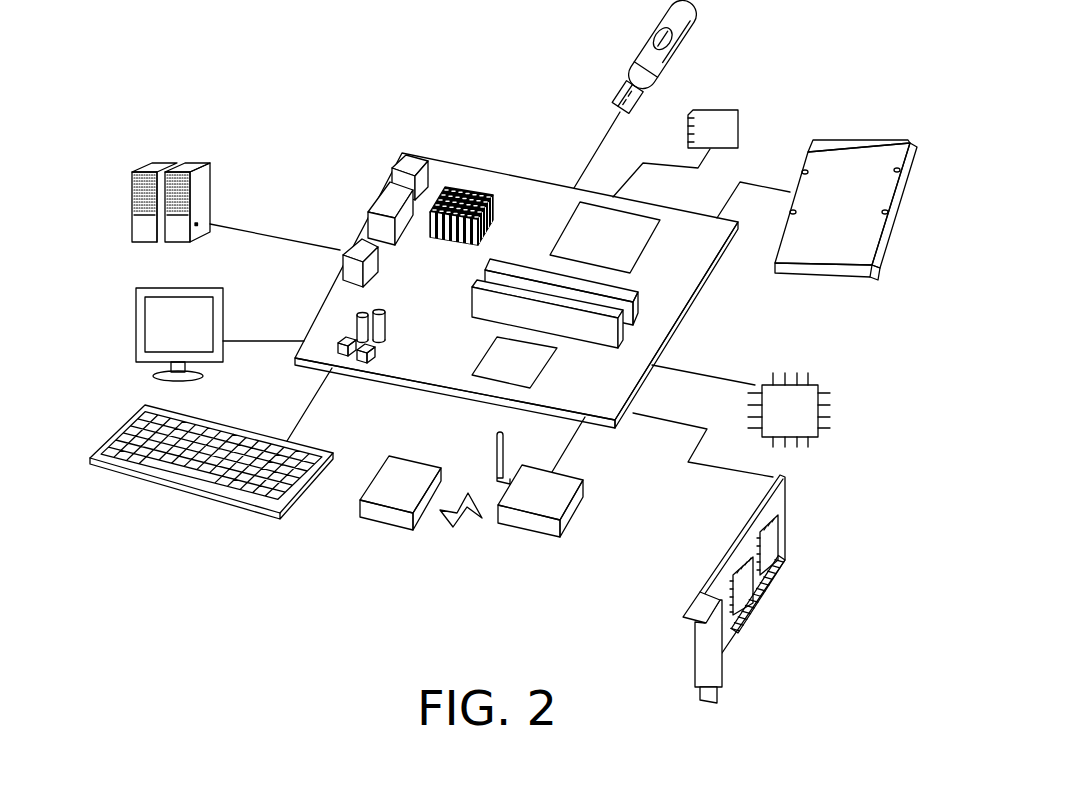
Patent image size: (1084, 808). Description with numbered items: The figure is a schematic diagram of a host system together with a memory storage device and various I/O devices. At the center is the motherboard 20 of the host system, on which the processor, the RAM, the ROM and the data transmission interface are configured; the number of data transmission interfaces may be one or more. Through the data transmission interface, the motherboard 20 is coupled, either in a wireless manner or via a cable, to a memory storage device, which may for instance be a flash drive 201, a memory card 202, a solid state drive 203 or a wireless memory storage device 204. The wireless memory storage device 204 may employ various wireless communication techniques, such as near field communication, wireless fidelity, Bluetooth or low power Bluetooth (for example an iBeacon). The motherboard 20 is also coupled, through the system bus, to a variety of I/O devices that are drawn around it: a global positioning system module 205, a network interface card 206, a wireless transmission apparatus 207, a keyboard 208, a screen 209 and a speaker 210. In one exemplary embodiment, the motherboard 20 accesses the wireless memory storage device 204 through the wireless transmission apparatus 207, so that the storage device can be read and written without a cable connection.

The motherboard 20 is at (518, 197).
The flash drive 201 is at (642, 44).
The memory card 202 is at (738, 118).
The solid state drive 203 is at (862, 138).
The wireless memory storage device 204 is at (377, 470).
The global positioning system module 205 is at (828, 408).
The network interface card 206 is at (787, 532).
The wireless transmission apparatus 207 is at (578, 517).
The keyboard 208 is at (215, 502).
The screen 209 is at (135, 343).
The speaker 210 is at (132, 218).